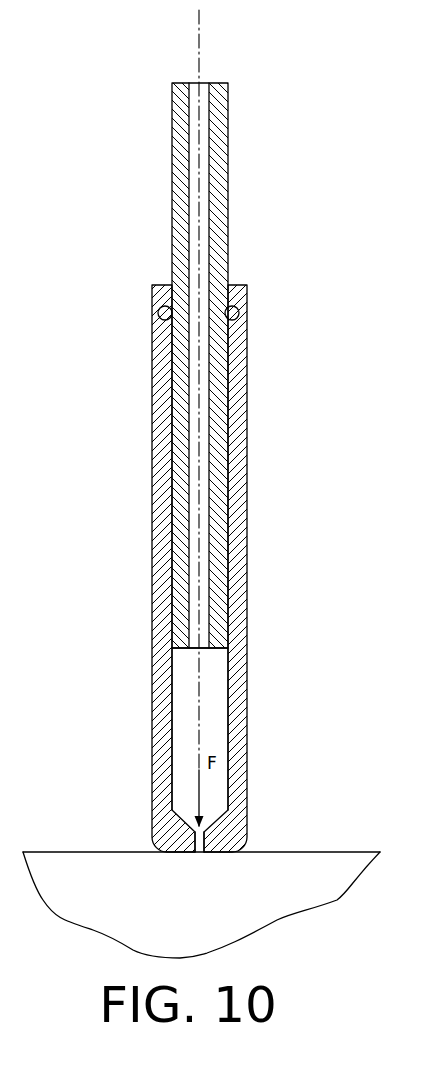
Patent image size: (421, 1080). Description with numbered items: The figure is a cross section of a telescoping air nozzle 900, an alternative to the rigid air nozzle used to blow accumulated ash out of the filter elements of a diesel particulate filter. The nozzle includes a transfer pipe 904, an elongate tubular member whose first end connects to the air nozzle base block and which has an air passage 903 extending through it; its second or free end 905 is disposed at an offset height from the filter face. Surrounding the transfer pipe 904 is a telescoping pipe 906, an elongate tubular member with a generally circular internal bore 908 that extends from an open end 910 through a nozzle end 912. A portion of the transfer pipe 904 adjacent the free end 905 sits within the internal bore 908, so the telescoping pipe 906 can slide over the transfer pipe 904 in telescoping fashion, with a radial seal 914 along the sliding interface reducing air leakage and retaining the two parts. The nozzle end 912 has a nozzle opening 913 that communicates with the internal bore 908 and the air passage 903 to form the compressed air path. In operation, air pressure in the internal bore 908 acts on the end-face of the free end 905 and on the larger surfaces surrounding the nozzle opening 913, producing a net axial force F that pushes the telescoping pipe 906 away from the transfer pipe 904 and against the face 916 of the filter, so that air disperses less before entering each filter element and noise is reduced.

The telescoping air nozzle 900 is at (274, 93).
The transfer pipe 904 is at (227, 178).
The air passage 903 is at (201, 388).
The open end 910 is at (264, 297).
The radial seal 914 is at (160, 317).
The telescoping pipe 906 is at (237, 493).
The internal bore 908 is at (183, 693).
The free end 905 is at (210, 655).
The nozzle end 912 is at (257, 823).
The nozzle opening 913 is at (195, 840).
The face of the DPF 916 is at (298, 852).